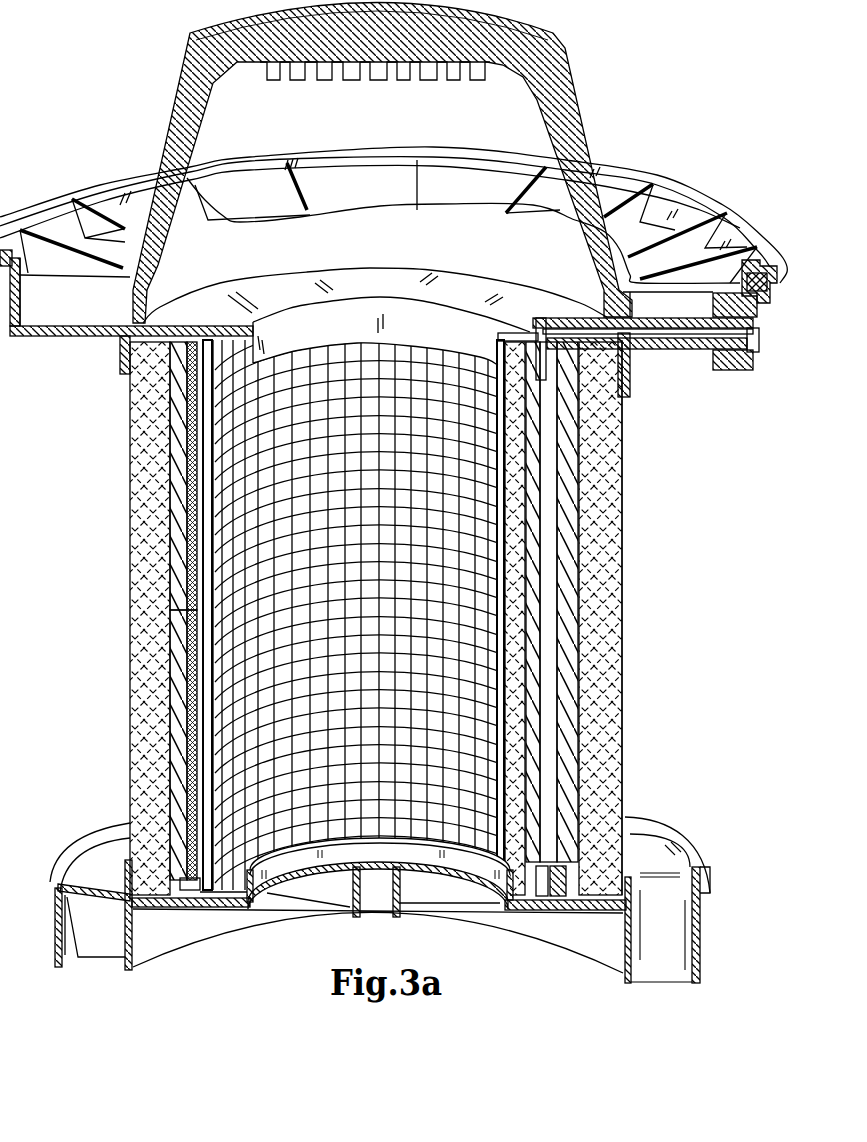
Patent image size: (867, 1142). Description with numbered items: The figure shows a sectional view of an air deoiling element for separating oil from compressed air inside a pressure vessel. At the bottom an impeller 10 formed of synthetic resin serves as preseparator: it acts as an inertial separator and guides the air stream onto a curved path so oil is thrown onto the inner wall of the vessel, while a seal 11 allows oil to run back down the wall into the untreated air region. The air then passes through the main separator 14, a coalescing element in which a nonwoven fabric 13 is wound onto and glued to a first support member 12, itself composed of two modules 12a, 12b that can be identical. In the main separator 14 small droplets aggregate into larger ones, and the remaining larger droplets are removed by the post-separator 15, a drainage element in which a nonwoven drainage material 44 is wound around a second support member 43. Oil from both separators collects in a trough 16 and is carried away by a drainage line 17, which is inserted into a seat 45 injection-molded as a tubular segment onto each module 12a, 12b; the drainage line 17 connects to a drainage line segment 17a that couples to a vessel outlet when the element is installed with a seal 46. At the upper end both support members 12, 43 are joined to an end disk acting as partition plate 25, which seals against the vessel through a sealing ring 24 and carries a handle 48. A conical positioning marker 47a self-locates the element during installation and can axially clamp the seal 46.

The handle 48 is at (535, 62).
The partition plate 25 is at (697, 200).
The sealing ring 24 is at (772, 275).
The positioning marker 47a is at (60, 297).
The drainage line segment 17a is at (677, 333).
The seal 46 is at (745, 372).
The drainage line 17 is at (548, 448).
The main separator 14 is at (634, 550).
The nonwoven fabric 13 is at (604, 655).
The seat 45 is at (548, 685).
The first support member 12 is at (590, 745).
The module 12a is at (173, 424).
The module 12b is at (175, 760).
The post-separator 15 is at (208, 692).
The impeller 10 is at (82, 866).
The second support member 43 is at (440, 836).
The nonwoven drainage material 44 is at (511, 890).
The trough 16 is at (543, 898).
The seal 11 is at (680, 947).